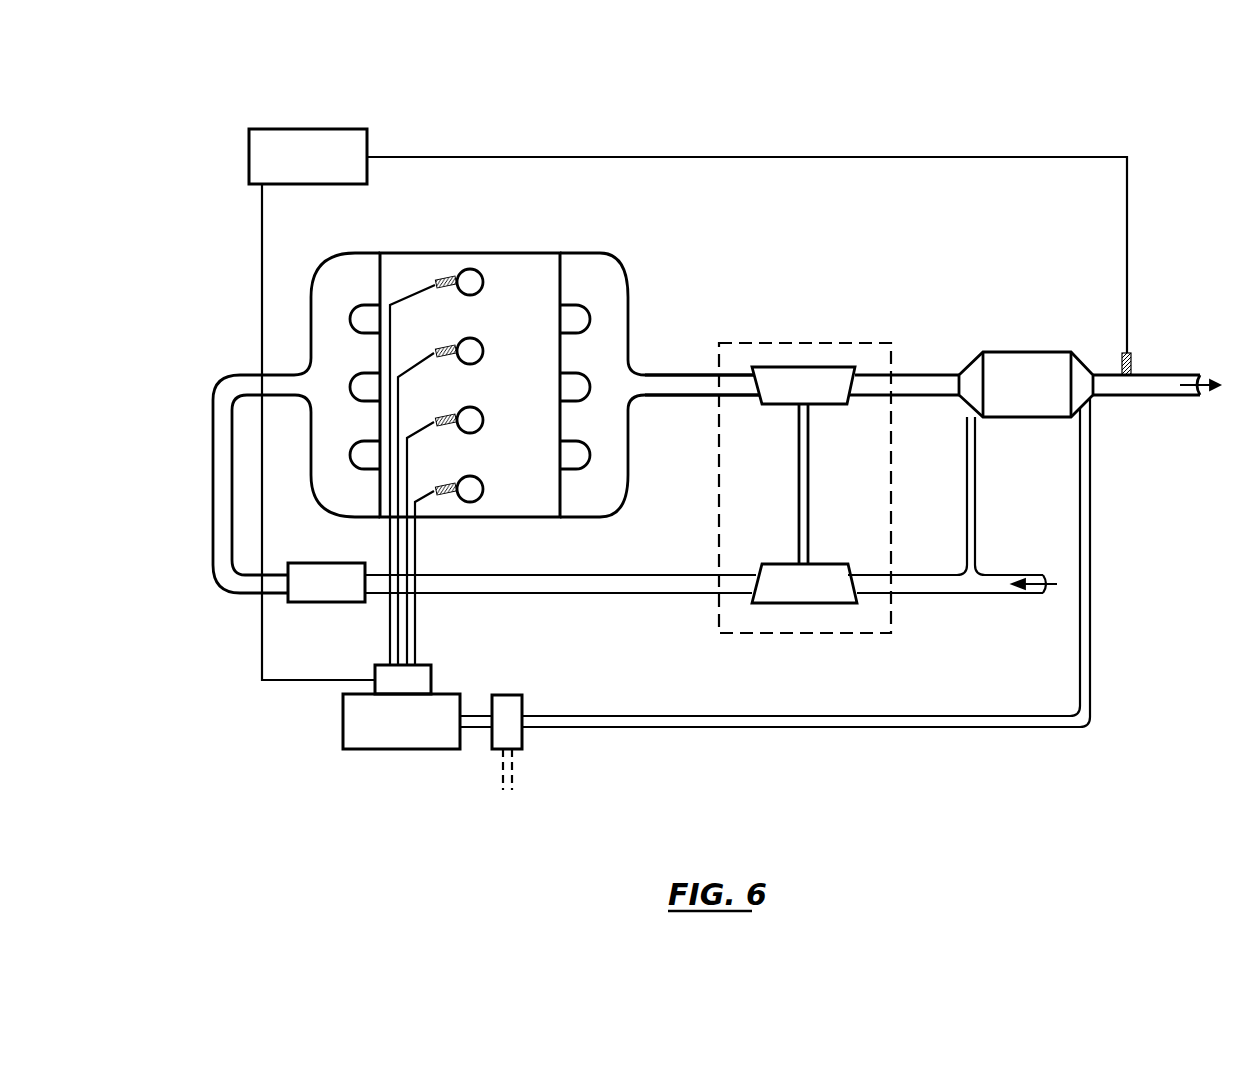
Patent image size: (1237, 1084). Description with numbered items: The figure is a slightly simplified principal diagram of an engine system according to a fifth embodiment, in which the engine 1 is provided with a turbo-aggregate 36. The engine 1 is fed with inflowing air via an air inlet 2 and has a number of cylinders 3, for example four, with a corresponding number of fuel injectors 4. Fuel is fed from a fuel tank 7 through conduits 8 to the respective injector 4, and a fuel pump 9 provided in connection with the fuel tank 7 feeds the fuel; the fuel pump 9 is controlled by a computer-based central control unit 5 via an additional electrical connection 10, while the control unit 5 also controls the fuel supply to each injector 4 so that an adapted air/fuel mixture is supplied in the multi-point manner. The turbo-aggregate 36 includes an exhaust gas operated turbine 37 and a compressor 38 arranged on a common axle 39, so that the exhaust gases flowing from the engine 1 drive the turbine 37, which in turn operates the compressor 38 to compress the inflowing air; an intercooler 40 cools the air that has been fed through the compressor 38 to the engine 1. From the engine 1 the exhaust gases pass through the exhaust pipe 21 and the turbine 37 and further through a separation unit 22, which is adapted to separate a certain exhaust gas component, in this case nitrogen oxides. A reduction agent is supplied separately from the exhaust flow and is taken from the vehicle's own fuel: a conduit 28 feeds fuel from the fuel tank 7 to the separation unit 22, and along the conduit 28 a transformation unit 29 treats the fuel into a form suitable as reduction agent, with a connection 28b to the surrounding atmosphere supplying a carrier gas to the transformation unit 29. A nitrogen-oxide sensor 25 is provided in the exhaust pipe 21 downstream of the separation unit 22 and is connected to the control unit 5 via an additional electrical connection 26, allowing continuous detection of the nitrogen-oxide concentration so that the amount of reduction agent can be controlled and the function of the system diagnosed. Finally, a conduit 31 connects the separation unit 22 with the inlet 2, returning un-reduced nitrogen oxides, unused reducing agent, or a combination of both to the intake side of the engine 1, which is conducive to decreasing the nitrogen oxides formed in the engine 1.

The engine 1 is at (545, 255).
The air inlet 2 is at (993, 588).
The cylinders 3 is at (481, 270).
The fuel injectors 4 is at (448, 278).
The central control unit 5 is at (303, 128).
The fuel tank 7 is at (343, 722).
The conduits 8 is at (390, 645).
The fuel pump 9 is at (431, 680).
The additional electrical connection 10 is at (262, 640).
The exhaust pipe 21 is at (698, 380).
The separation unit 22 is at (1025, 362).
The NOx sensor 25 is at (1135, 362).
The additional electrical connection 26 is at (1127, 255).
The conduit 28 is at (1090, 503).
The connection to the surrounding atmosphere 28b is at (514, 770).
The transformation unit 29 is at (522, 738).
The conduit 31 is at (975, 503).
The turbo-aggregate 36 is at (830, 340).
The exhaust gas turbine 37 is at (803, 380).
The compressor 38 is at (808, 600).
The common axle 39 is at (808, 502).
The intercooler 40 is at (335, 563).